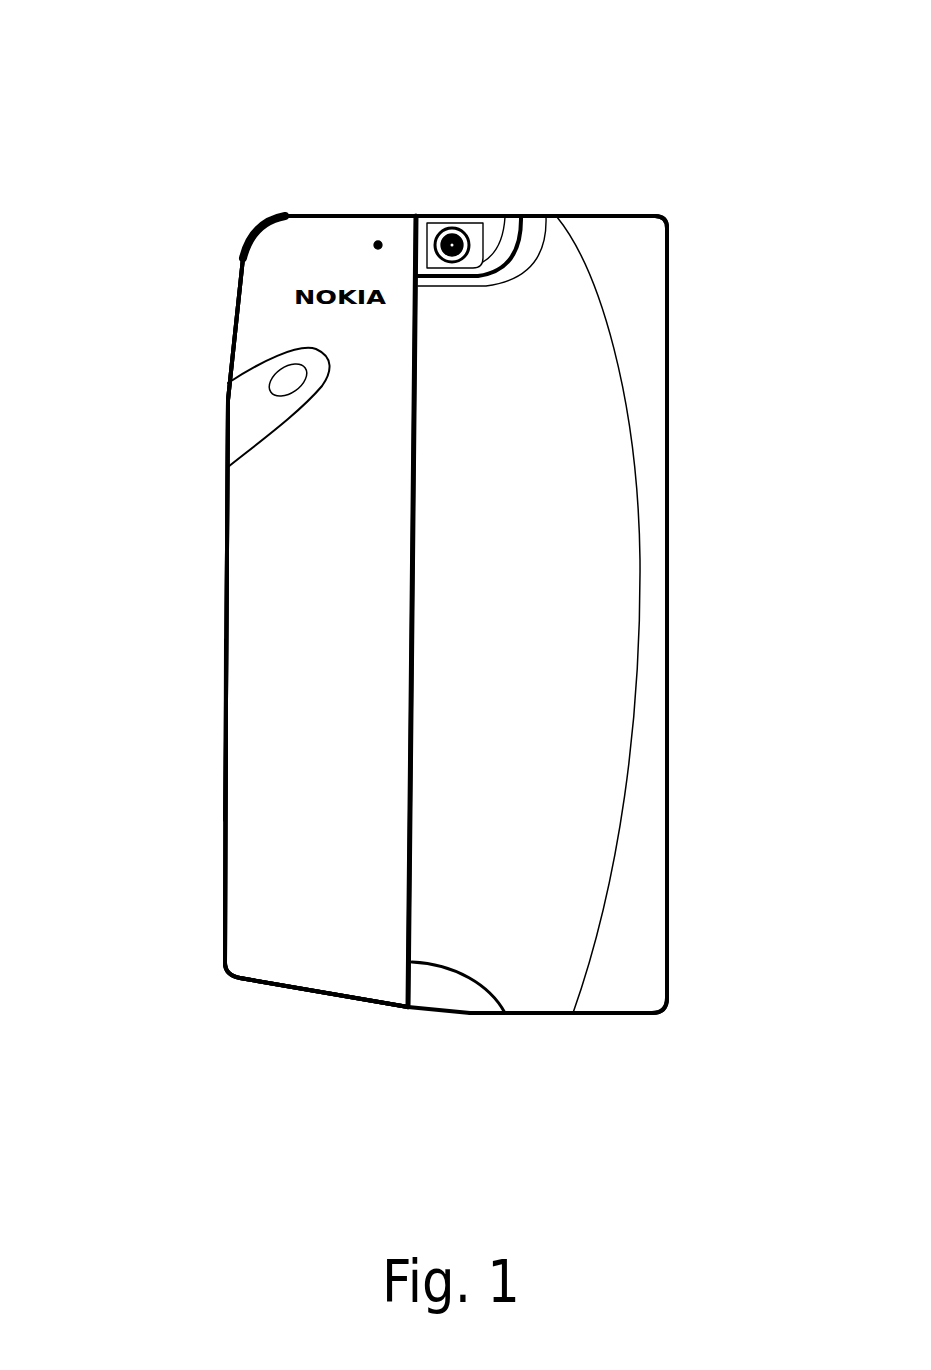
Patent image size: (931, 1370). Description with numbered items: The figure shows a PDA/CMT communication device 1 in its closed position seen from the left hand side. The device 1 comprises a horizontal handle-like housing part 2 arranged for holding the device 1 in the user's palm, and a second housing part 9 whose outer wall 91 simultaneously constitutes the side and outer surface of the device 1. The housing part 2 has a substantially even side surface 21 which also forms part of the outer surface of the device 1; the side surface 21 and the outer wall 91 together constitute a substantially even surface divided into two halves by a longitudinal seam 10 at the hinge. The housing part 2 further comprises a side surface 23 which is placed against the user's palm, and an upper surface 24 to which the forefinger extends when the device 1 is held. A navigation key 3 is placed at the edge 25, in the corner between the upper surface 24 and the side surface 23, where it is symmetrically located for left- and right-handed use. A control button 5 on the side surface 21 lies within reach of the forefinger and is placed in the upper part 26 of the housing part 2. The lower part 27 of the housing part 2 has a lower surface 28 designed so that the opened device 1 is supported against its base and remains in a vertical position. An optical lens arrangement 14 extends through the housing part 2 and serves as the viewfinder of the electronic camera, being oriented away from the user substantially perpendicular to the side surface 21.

The communication device 1 is at (440, 33).
The housing part 2 is at (209, 777).
The navigation key 3 is at (262, 219).
The control button 5 is at (283, 382).
The second housing part 9 is at (592, 763).
The longitudinal seam 10 is at (505, 1013).
The optical lens arrangement 14 is at (379, 240).
The side surface 21 is at (272, 877).
The side surface 23 is at (230, 730).
The upper surface 24 is at (320, 215).
The edge 25 is at (247, 243).
The upper part 26 is at (248, 333).
The lower part 27 is at (263, 791).
The lower surface 28 is at (333, 998).
The outer wall 91 is at (593, 677).